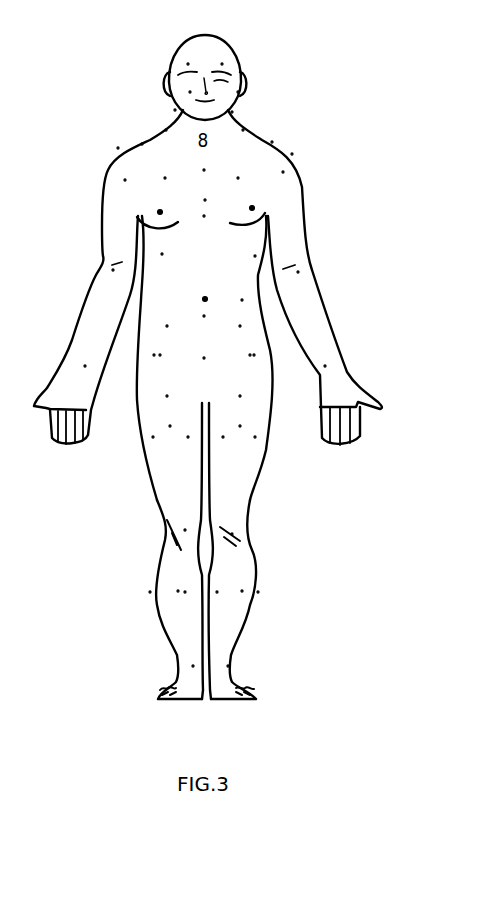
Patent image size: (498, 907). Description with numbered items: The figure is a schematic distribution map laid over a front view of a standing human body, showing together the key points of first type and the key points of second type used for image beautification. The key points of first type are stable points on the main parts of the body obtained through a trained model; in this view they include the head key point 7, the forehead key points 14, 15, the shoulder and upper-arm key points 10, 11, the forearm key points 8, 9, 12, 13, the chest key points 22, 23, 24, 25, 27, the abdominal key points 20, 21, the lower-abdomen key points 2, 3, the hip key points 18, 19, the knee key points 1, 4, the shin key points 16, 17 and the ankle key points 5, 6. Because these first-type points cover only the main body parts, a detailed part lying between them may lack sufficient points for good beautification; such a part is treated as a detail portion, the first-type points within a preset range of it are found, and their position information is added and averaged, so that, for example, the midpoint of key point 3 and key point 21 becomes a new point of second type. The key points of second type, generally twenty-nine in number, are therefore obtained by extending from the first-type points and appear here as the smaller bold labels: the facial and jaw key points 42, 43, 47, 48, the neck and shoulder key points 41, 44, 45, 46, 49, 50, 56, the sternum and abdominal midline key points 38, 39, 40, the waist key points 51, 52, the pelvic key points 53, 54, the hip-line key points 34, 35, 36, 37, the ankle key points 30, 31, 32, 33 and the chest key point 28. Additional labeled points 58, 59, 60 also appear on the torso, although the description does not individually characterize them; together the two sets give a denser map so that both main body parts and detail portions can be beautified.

The key point of first type 1 is at (232, 522).
The key point of first type 2 is at (244, 348).
The key point of first type 3 is at (168, 350).
The key point of first type 4 is at (185, 516).
The key point of first type 5 is at (193, 654).
The key point of first type 6 is at (228, 654).
The key point of first type 7 is at (205, 67).
The key point of first type 8 is at (325, 354).
The key point of first type 9 is at (298, 284).
The key point of first type 10 is at (285, 184).
The key point of first type 11 is at (125, 191).
The key point of first type 12 is at (113, 283).
The key point of first type 13 is at (85, 354).
The key point of first type 14 is at (188, 53).
The key point of first type 15 is at (222, 53).
The key point of first type 16 is at (242, 579).
The key point of first type 17 is at (178, 579).
The key point of first type 18 is at (240, 413).
The key point of first type 19 is at (170, 413).
The key point of first type 20 is at (242, 288).
The key point of first type 21 is at (184, 289).
The key point of first type 22 is at (238, 166).
The key point of first type 23 is at (165, 166).
The key point of first type 24 is at (238, 203).
The key point of first type 25 is at (170, 203).
The key point of first type 27 is at (175, 248).
The key point of second type 28 is at (242, 253).
The key point of second type 30 is at (265, 601).
The key point of second type 31 is at (222, 601).
The key point of second type 32 is at (187, 601).
The key point of second type 33 is at (145, 601).
The key point of second type 34 is at (223, 444).
The key point of second type 35 is at (255, 444).
The key point of second type 36 is at (153, 444).
The key point of second type 37 is at (188, 444).
The key point of second type 38 is at (204, 368).
The key point of second type 39 is at (204, 326).
The key point of second type 40 is at (205, 225).
The key point of second type 41 is at (203, 160).
The key point of second type 42 is at (188, 82).
The key point of second type 43 is at (166, 103).
The key point of second type 44 is at (158, 123).
The key point of second type 45 is at (109, 139).
The key point of second type 46 is at (135, 133).
The key point of second type 47 is at (246, 87).
The key point of second type 48 is at (238, 104).
The key point of second type 49 is at (248, 123).
The key point of second type 50 is at (288, 143).
The key point of second type 51 is at (167, 316).
The key point of second type 52 is at (240, 316).
The key point of second type 53 is at (167, 386).
The key point of second type 54 is at (240, 386).
The key point of second type 56 is at (265, 131).
The left lower abdomen point 58 is at (150, 364).
The right lower abdomen point 59 is at (257, 363).
The upper sternum point 60 is at (206, 188).